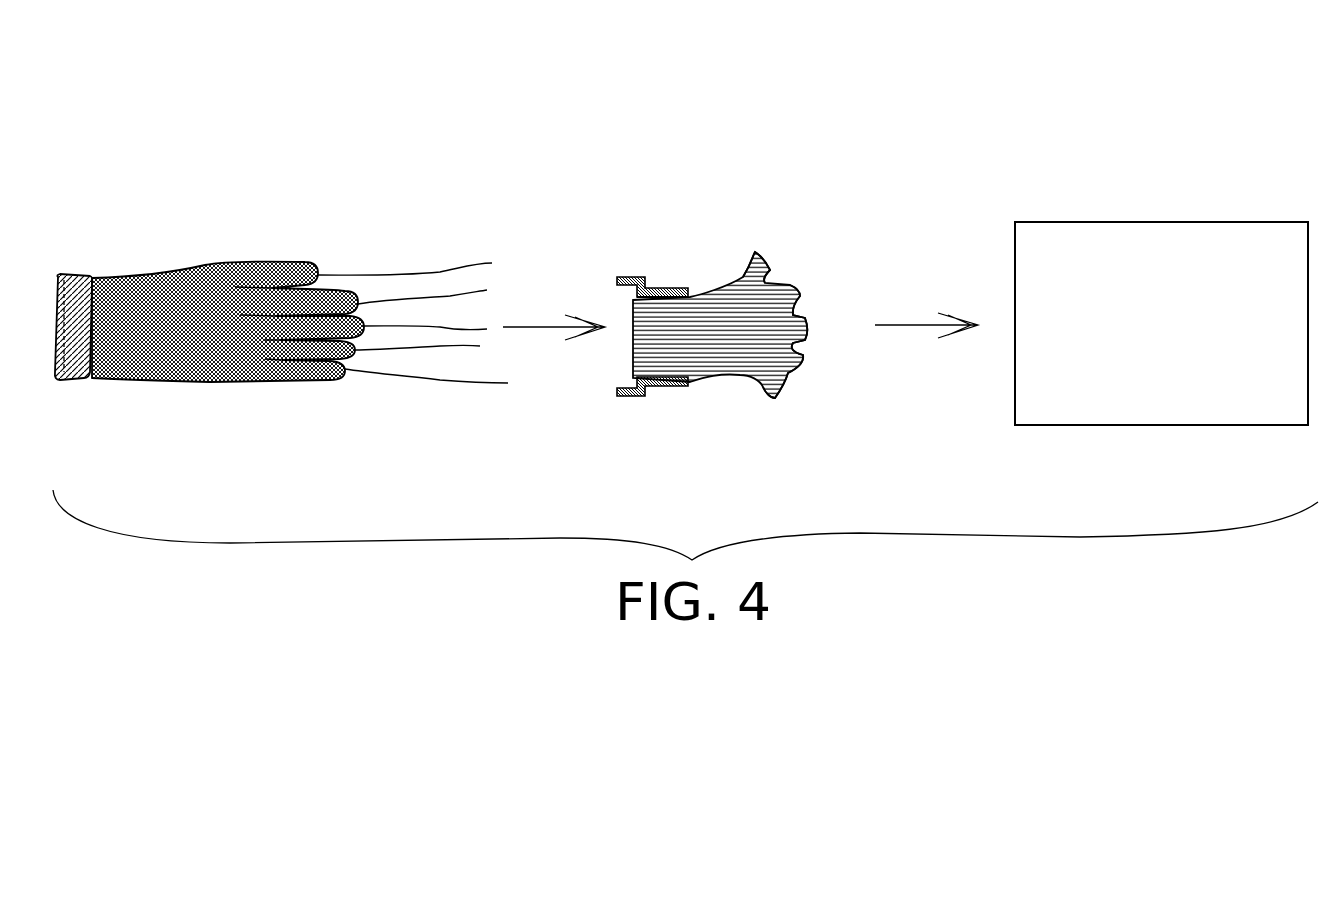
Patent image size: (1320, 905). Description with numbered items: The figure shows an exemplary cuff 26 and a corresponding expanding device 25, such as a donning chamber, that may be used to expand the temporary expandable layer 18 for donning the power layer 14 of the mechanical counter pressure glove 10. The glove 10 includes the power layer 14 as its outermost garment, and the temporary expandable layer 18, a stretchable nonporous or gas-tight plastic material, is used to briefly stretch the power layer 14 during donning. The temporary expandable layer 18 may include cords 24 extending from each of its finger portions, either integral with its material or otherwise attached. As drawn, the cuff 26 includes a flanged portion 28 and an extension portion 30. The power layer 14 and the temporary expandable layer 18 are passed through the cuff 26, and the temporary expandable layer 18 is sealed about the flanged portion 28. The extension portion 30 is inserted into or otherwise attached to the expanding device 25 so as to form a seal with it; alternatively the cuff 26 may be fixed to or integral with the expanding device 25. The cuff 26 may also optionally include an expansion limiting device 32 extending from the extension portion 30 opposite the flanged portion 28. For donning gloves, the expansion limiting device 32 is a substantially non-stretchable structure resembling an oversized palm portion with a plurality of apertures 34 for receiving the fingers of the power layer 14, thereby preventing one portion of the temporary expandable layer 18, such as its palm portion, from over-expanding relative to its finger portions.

The mechanical counter pressure glove 10 is at (145, 128).
The power layer 14 is at (195, 287).
The temporary expandable layer 18 is at (77, 280).
The cords 24 is at (442, 382).
The expanding device 25 is at (1063, 221).
The cuff 26 is at (635, 425).
The flanged portion 28 is at (632, 278).
The extension portion 30 is at (667, 290).
The expansion limiting device 32 is at (718, 300).
The apertures 34 is at (770, 252).